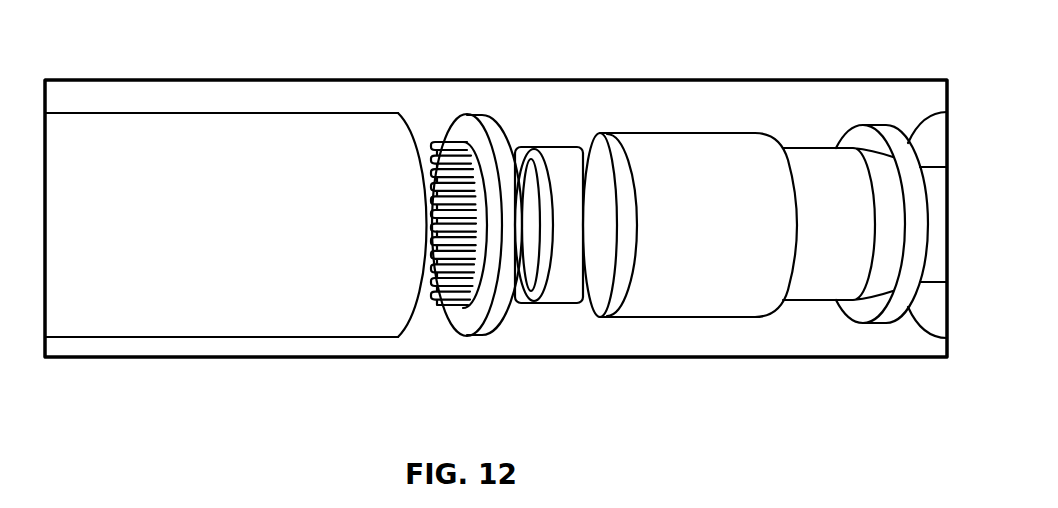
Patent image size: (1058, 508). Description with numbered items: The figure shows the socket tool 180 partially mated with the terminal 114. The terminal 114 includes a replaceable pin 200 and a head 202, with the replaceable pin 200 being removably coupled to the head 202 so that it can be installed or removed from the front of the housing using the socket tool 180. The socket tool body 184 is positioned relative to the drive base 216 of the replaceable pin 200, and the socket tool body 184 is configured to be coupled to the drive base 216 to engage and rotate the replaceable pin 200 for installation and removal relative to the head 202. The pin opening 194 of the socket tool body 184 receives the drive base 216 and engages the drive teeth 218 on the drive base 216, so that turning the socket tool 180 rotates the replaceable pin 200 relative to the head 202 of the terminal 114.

The terminal 114 is at (600, 55).
The socket tool 180 is at (242, 98).
The socket tool body 184 is at (248, 313).
The pin opening 194 is at (430, 293).
The replaceable pin 200 is at (442, 155).
The head 202 is at (700, 296).
The drive base 216 is at (457, 183).
The drive teeth 218 is at (467, 238).